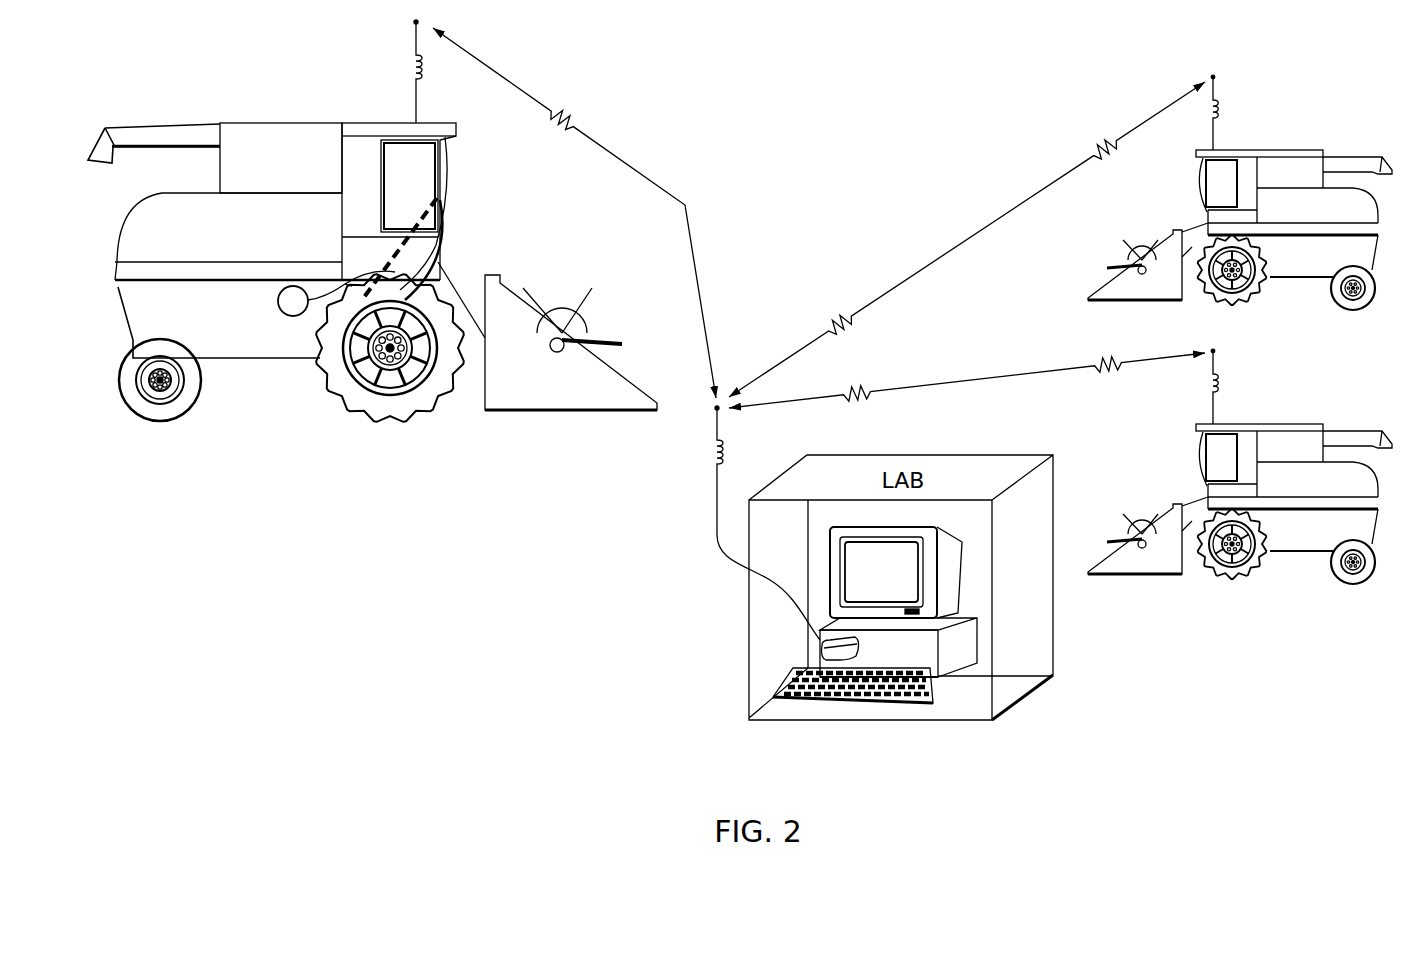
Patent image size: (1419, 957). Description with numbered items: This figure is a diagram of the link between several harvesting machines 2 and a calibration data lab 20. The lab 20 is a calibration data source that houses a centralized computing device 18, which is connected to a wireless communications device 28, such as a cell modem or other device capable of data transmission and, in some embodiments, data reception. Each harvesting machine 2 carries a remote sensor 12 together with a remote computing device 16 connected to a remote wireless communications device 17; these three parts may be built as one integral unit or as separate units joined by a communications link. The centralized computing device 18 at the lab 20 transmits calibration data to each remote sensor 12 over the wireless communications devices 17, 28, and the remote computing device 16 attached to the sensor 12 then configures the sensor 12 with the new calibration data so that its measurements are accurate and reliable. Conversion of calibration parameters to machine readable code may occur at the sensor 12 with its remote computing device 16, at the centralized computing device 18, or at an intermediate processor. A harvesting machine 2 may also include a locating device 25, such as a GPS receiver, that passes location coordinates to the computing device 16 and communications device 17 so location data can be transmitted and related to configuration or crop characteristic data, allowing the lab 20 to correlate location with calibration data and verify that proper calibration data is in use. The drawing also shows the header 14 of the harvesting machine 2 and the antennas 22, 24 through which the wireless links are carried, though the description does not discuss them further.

The harvesting machine 2 is at (740, 302).
The remote sensor 12 is at (292, 325).
The header 14 is at (460, 320).
The remote computing device 16 is at (424, 240).
The remote wireless communications device 17 is at (434, 208).
The centralized computing device 18 is at (957, 658).
The calibration lab 20 is at (1027, 576).
The transmitter antenna 22 is at (403, 72).
The receiver antenna 24 is at (705, 455).
The locating device 25 is at (348, 286).
The wireless communications device 28 is at (816, 646).